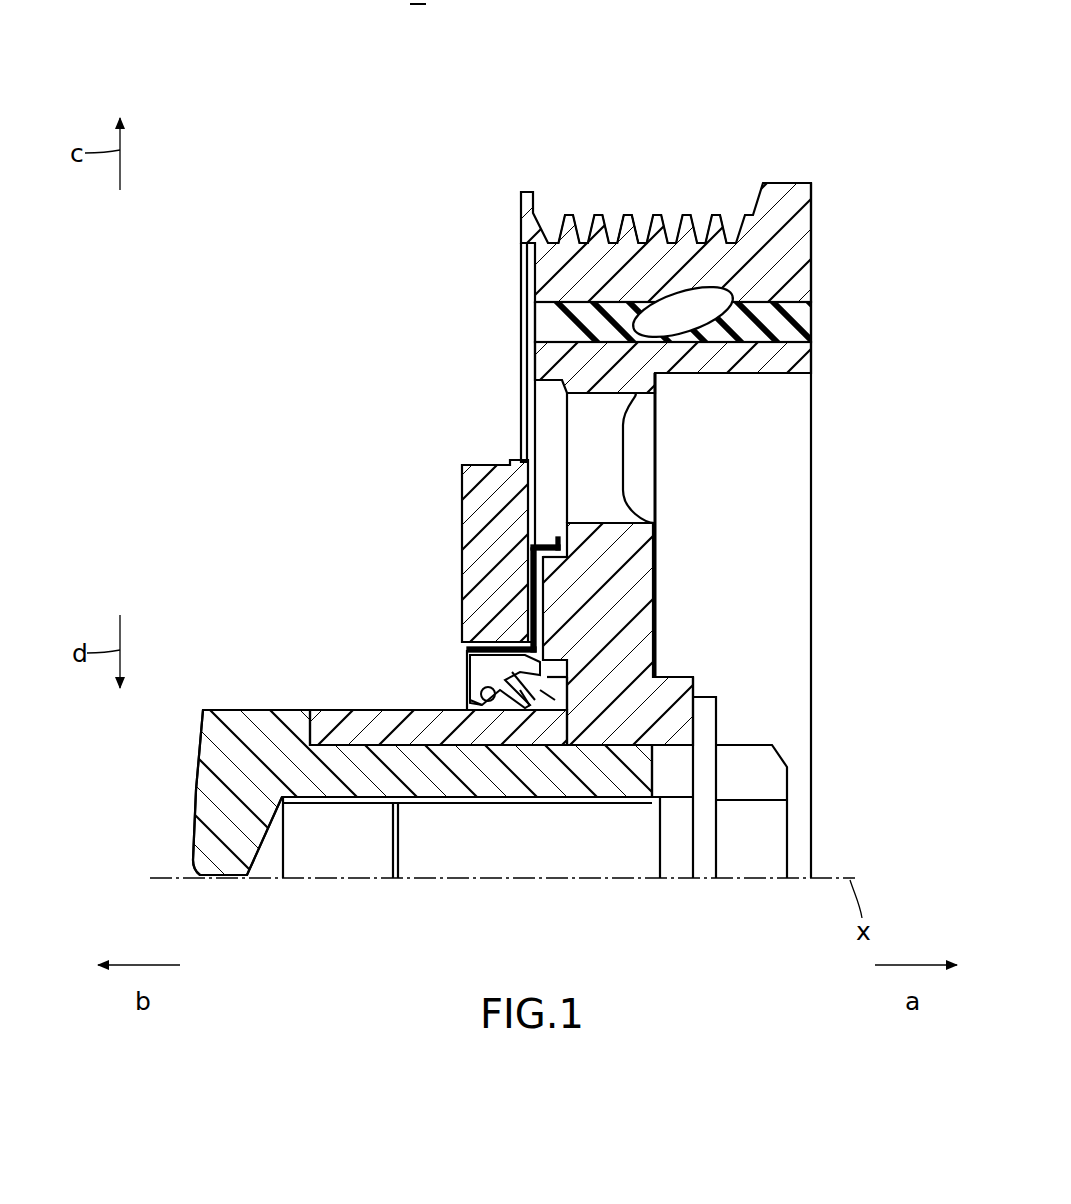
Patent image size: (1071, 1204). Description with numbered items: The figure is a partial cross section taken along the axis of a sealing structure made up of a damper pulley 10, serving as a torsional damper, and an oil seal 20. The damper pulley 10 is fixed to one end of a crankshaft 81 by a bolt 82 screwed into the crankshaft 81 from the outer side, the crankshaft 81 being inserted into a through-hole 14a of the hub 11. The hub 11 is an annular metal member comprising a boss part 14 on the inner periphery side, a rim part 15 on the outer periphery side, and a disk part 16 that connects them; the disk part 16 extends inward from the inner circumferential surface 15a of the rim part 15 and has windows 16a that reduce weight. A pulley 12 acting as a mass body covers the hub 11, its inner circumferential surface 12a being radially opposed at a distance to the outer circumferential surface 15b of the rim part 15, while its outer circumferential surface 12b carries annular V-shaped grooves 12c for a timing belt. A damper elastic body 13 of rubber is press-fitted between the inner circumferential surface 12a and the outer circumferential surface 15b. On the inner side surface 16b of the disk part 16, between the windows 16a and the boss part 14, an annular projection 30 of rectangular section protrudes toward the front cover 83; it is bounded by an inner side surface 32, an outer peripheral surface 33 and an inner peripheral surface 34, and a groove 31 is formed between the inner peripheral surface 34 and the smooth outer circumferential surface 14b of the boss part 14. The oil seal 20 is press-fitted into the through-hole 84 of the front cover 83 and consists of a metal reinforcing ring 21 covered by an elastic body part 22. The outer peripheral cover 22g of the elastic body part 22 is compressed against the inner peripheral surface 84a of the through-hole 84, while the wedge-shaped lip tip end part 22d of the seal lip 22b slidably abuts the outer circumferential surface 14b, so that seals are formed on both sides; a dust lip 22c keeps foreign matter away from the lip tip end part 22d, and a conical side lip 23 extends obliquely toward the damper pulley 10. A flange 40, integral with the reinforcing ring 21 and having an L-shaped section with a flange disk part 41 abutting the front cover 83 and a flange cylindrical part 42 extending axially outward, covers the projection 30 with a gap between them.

The damper pulley 10 is at (831, 141).
The hub 11 is at (882, 497).
The pulley 12 is at (819, 218).
The inner circumferential surface 12a is at (790, 300).
The outer circumferential surface 12b is at (597, 210).
The annular V-shaped grooves 12c is at (640, 235).
The damper elastic body 13 is at (798, 326).
The boss part 14 is at (696, 670).
The through-hole 14a is at (677, 770).
The outer circumferential surface 14b is at (325, 706).
The rim part 15 is at (779, 388).
The inner circumferential surface 15a is at (722, 375).
The outer circumferential surface 15b is at (540, 307).
The disk part 16 is at (665, 495).
The window 16a is at (612, 473).
The inner side surface 16b is at (555, 477).
The oil seal 20 is at (455, 680).
The reinforcing ring 21 is at (465, 658).
The elastic body part 22 is at (465, 700).
The seal lip 22b is at (505, 705).
The dust lip 22c is at (528, 706).
The lip tip end part 22d is at (466, 706).
The outer peripheral cover 22g is at (487, 687).
The side lip 23 is at (545, 700).
The projection 30 is at (885, 598).
The groove 31 is at (603, 745).
The inner side surface 32 is at (540, 598).
The outer peripheral surface 33 is at (562, 541).
The inner peripheral surface 34 is at (565, 670).
The flange 40 is at (468, 366).
The flange disk part 41 is at (530, 600).
The flange cylindrical part 42 is at (552, 546).
The crankshaft 81 is at (220, 787).
The bolt 82 is at (777, 846).
The front cover 83 is at (456, 528).
The through-hole 84 is at (458, 649).
The inner peripheral surface 84a is at (462, 641).